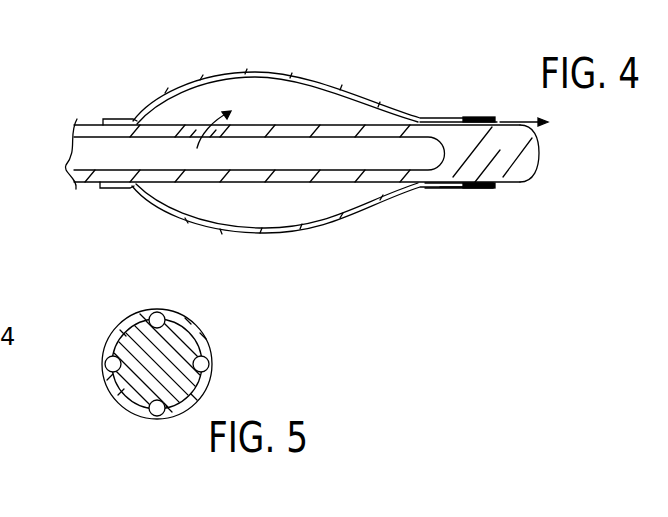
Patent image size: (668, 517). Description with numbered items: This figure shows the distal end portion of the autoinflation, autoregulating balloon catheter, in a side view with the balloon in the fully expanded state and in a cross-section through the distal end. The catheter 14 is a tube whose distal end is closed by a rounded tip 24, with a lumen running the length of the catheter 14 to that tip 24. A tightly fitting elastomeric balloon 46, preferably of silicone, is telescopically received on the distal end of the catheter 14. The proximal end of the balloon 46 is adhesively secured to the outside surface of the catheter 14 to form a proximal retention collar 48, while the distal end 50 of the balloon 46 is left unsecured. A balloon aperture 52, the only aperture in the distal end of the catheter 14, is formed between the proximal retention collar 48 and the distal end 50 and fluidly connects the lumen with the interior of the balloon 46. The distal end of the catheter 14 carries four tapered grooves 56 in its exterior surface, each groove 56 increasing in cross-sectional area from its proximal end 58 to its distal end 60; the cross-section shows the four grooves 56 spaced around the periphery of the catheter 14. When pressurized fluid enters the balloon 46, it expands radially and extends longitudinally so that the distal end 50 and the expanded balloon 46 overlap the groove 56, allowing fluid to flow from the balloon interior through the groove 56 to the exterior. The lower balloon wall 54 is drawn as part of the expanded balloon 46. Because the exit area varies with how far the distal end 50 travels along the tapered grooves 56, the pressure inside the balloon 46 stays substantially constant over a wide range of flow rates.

In FIG. 4, the catheter 14 is at (90, 120).
In FIG. 4, the rounded tip 24 is at (538, 152).
In FIG. 5, the rounded tip 24 is at (177, 340).
In FIG. 4, the balloon 46 is at (318, 77).
In FIG. 4, the proximal retention collar 48 is at (112, 118).
In FIG. 4, the distal end of the balloon 50 is at (483, 188).
In FIG. 4, the balloon aperture 52 is at (200, 148).
In FIG. 4, the lower balloon wall 54 is at (302, 212).
In FIG. 4, the groove 56 is at (508, 124).
In FIG. 5, the groove 56 is at (152, 313).
In FIG. 4, the proximal end of the groove 58 is at (465, 186).
In FIG. 4, the distal end of the groove 60 is at (530, 128).